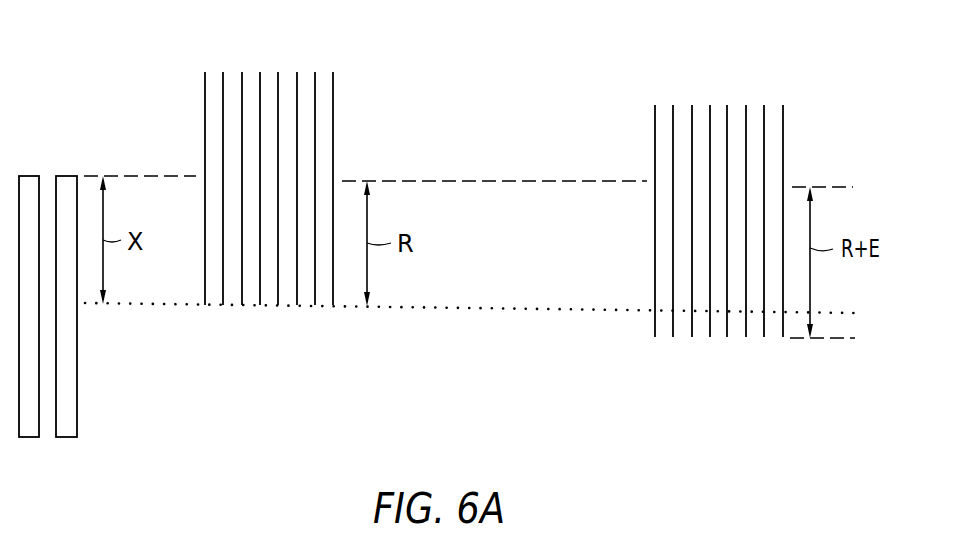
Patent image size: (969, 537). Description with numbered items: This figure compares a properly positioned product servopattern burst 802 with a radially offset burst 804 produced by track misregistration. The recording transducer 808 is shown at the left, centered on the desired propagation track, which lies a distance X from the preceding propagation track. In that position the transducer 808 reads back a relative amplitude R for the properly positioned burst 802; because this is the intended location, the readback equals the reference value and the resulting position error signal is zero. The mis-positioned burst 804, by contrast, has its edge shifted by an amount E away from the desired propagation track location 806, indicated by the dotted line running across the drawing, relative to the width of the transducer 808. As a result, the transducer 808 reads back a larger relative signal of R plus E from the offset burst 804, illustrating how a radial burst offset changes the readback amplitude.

The properly positioned burst 802 is at (223, 62).
The mis-positioned burst 804 is at (700, 102).
The desired propagation track location 806 is at (468, 309).
The recording transducer 808 is at (45, 438).